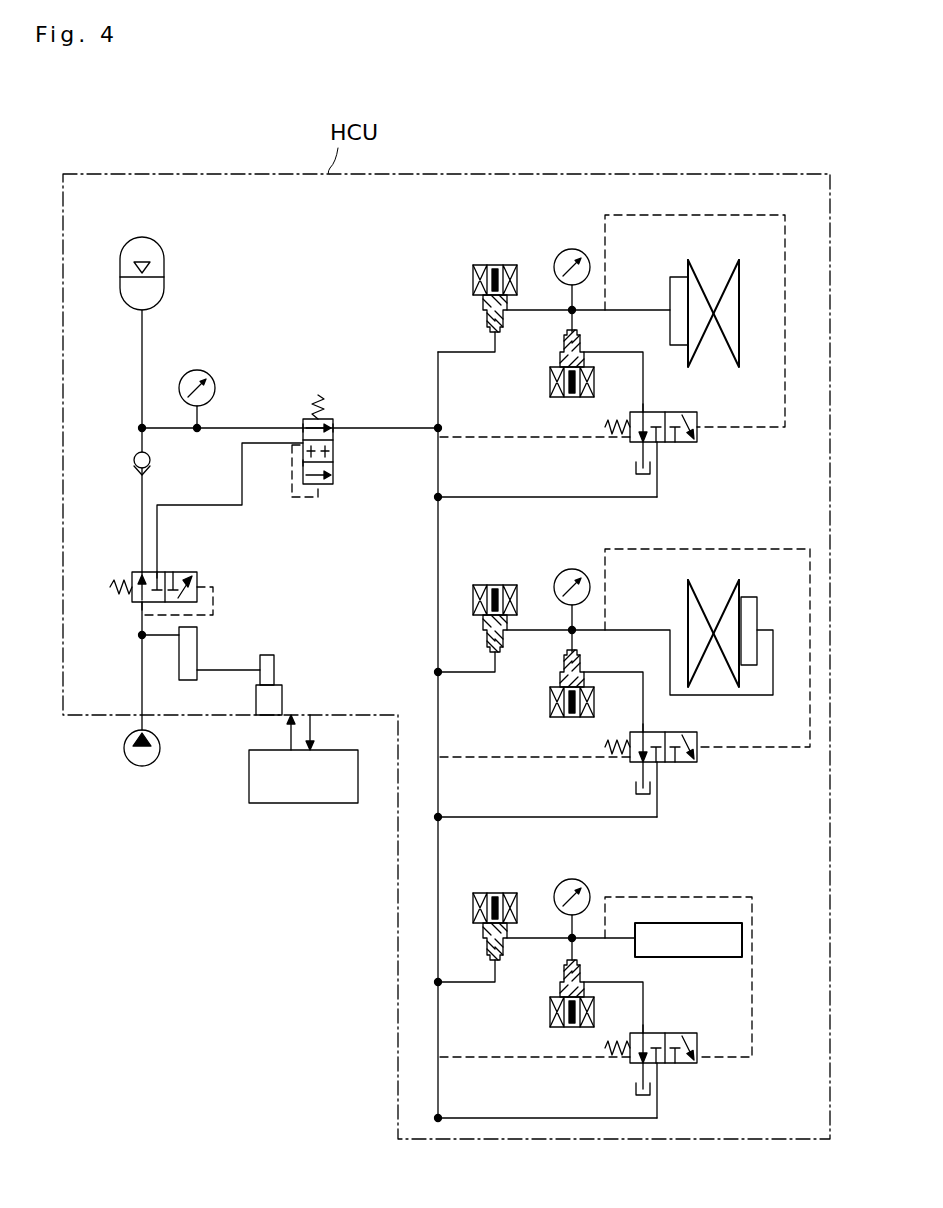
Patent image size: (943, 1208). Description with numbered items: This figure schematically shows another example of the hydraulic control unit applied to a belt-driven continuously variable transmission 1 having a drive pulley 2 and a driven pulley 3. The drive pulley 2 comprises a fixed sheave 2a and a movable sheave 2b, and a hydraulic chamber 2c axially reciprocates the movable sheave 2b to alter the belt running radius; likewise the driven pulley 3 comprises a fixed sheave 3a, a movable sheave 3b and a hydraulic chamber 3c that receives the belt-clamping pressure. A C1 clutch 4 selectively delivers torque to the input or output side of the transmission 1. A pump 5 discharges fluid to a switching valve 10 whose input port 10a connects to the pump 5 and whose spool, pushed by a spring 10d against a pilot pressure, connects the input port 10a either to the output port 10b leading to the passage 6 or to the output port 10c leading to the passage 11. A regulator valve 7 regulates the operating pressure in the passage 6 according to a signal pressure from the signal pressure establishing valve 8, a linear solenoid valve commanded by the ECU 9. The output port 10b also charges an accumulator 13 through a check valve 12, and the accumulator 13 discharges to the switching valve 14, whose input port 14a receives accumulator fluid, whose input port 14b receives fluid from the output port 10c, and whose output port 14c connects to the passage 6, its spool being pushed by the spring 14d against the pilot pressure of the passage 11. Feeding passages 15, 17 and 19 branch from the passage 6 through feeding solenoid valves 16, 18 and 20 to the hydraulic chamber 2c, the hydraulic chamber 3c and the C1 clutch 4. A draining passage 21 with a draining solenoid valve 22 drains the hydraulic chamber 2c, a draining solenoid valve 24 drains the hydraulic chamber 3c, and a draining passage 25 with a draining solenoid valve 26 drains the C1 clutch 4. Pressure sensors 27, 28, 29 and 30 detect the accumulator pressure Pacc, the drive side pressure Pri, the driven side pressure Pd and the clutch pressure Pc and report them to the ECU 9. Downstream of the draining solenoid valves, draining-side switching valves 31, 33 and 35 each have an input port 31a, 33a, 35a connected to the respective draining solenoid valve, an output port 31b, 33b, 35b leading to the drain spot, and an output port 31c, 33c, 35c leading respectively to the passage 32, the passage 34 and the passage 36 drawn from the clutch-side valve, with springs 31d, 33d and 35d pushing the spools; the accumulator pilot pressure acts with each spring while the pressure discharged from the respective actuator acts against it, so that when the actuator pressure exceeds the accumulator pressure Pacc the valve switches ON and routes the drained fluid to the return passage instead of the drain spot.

The continuously variable transmission 1 is at (756, 318).
The drive pulley 2 is at (713, 246).
The fixed sheave 2a is at (735, 265).
The movable sheave 2b is at (698, 265).
The hydraulic chamber 2c is at (674, 278).
The driven pulley 3 is at (713, 572).
The fixed sheave 3a is at (694, 588).
The movable sheave 3b is at (738, 588).
The hydraulic chamber 3c is at (757, 598).
The C1 clutch 4 is at (711, 957).
The pump 5 is at (142, 766).
The passage 6 is at (240, 426).
The regulator valve 7 is at (197, 642).
The signal pressure establishing valve 8 is at (274, 670).
The electronic control unit 9 is at (303, 803).
The switching valve 10 is at (220, 580).
The input port 10a is at (140, 610).
The output port 10b is at (138, 574).
The output port 10c is at (158, 572).
The spring 10d is at (110, 589).
The passage 11 is at (204, 505).
The check valve 12 is at (134, 452).
The accumulator 13 is at (165, 262).
The switching valve 14 is at (338, 452).
The input port 14a is at (302, 426).
The input port 14b is at (300, 458).
The output port 14c is at (334, 422).
The spring 14d is at (313, 396).
The feeding passage 15 is at (464, 352).
The feeding solenoid valve 16 is at (468, 276).
The feeding passage 17 is at (464, 672).
The feeding solenoid valve 18 is at (490, 578).
The feeding passage 19 is at (464, 982).
The feeding solenoid valve 20 is at (490, 888).
The draining passage 21 is at (632, 352).
The draining solenoid valve 22 is at (548, 385).
The draining solenoid valve 24 is at (545, 708).
The draining passage 25 is at (614, 982).
The draining solenoid valve 26 is at (545, 1015).
The input pressure sensor 27 is at (201, 370).
The drive side control pressure sensor 28 is at (563, 250).
The driven side control pressure sensor 29 is at (563, 572).
The input pressure sensor 30 is at (563, 877).
The switching valve 31 is at (698, 403).
The input port 31a is at (646, 410).
The output port 31b is at (636, 456).
The output port 31c is at (658, 446).
The spring 31d is at (632, 428).
The passage 32 is at (541, 496).
The switching valve 33 is at (710, 723).
The input port 33a is at (646, 730).
The output port 33b is at (634, 778).
The output port 33c is at (658, 769).
The spring 33d is at (604, 750).
The passage 34 is at (541, 816).
The switching valve 35 is at (712, 1031).
The input port 35a is at (646, 1030).
The output port 35b is at (636, 1079).
The output port 35c is at (658, 1069).
The spring 35d is at (600, 1052).
The drain line 36 is at (541, 1116).